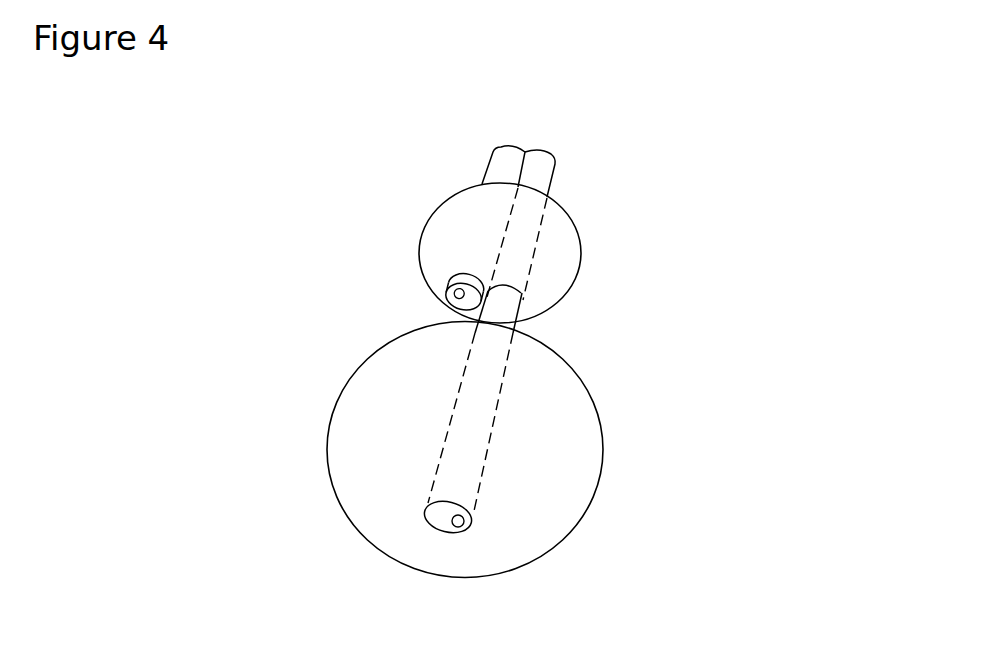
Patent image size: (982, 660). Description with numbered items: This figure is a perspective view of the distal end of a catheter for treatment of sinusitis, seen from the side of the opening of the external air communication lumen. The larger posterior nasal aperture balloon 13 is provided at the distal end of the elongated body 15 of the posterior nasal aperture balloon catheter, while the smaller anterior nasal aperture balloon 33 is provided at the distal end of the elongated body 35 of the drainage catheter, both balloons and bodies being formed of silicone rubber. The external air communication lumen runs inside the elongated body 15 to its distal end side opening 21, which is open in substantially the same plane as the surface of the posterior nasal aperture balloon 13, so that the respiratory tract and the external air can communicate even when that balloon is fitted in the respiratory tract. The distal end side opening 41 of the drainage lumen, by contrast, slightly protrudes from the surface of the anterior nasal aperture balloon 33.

The posterior nasal aperture balloon 13 is at (543, 535).
The anterior nasal aperture balloon 33 is at (577, 268).
The elongated body 15 is at (512, 313).
The elongated body 35 is at (505, 172).
The opening 21 is at (460, 527).
The distal end side opening 41 is at (455, 297).